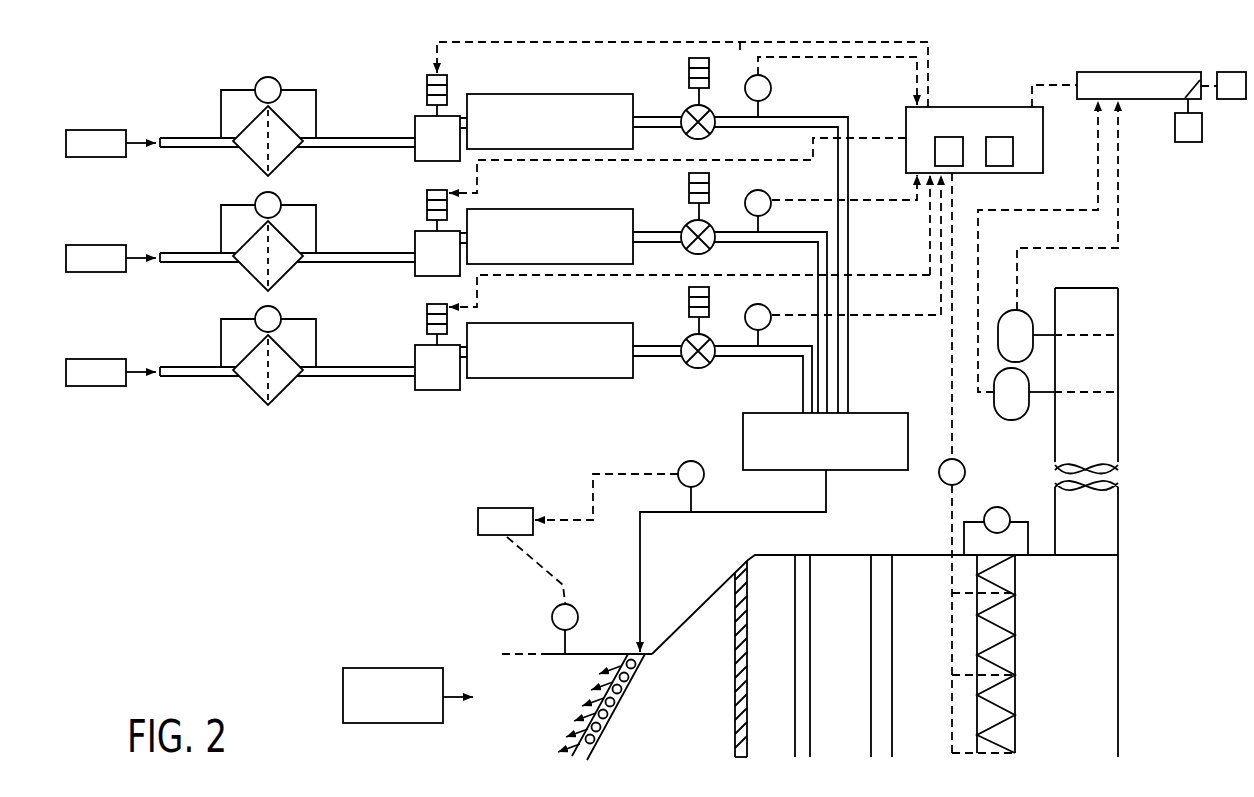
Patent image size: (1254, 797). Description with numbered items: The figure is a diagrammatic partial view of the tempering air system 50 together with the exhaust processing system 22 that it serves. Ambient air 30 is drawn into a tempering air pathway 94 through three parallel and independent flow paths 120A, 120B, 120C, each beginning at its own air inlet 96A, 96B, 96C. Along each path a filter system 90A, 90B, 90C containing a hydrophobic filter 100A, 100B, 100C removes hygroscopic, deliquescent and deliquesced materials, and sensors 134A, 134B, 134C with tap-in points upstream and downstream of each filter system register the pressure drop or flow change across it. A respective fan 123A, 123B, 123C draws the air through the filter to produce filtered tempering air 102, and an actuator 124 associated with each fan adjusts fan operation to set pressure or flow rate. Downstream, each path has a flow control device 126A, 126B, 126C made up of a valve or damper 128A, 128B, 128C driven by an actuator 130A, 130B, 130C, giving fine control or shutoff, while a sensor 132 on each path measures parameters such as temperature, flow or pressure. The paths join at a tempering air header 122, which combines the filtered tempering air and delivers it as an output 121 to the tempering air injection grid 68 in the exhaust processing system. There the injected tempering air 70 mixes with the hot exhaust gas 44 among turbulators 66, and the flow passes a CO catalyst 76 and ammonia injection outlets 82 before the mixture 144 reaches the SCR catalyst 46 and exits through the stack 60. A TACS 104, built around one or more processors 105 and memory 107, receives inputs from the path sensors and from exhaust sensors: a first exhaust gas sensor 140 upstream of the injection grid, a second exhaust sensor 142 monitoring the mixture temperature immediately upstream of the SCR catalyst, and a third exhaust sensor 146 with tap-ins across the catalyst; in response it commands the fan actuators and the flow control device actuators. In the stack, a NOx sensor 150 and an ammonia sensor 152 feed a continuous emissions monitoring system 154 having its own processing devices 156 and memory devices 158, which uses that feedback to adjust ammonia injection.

The tempering air system 50 is at (213, 41).
The air 30 is at (96, 129).
The first parallel and independent flow path 120A is at (62, 140).
The second parallel and independent flow path 120B is at (62, 255).
The third parallel and independent flow path 120C is at (62, 369).
The first air inlet 96A is at (174, 132).
The second air inlet 96B is at (174, 247).
The third air inlet 96C is at (174, 361).
The filter system 90A is at (285, 77).
The filter system 90B is at (285, 192).
The filter system 90C is at (285, 306).
The sensor 134A is at (257, 80).
The sensor 134B is at (257, 195).
The sensor 134C is at (257, 309).
The hydrophobic filter 100A is at (270, 138).
The hydrophobic filter 100B is at (270, 253).
The hydrophobic filter 100C is at (270, 367).
The tempering air pathway 94 is at (200, 150).
The first fan 123A is at (416, 118).
The second fan 123B is at (416, 233).
The third fan 123C is at (416, 347).
The actuator 124 is at (437, 73).
The filtered tempering air 102 is at (548, 94).
The flow control valve or damper 128A is at (686, 110).
The flow control valve or damper 128B is at (686, 225).
The flow control valve or damper 128C is at (686, 339).
The actuator 130A is at (689, 66).
The actuator 130B is at (689, 181).
The actuator 130C is at (689, 295).
The flow control device 126A is at (712, 62).
The flow control device 126B is at (712, 177).
The flow control device 126C is at (712, 291).
The sensor 132 is at (770, 95).
The TACS 104 is at (970, 106).
The processor 105 is at (935, 150).
The memory 107 is at (1013, 150).
The tempering air header 122 is at (880, 413).
The output 121 is at (826, 494).
The continuous emissions monitoring system 154 is at (1138, 71).
The processing device 156 is at (1188, 143).
The memory device 158 is at (1226, 71).
The stack 60 is at (1118, 312).
The ammonia sensor 152 is at (1032, 328).
The NOx sensor 150 is at (996, 400).
The second exhaust sensor 142 is at (943, 462).
The third exhaust sensor 146 is at (1007, 510).
The first exhaust gas sensor 140 is at (552, 611).
The exhaust gas 44 is at (390, 667).
The exhaust processing system 22 is at (730, 566).
The turbulators 66 is at (740, 742).
The tempering air injection grid 68 is at (636, 699).
The tempering air 70 is at (570, 752).
The CO catalyst 76 is at (800, 746).
The ammonia injection outlets 82 is at (882, 746).
The mixture 144 is at (935, 656).
The SCR catalyst 46 is at (1010, 734).